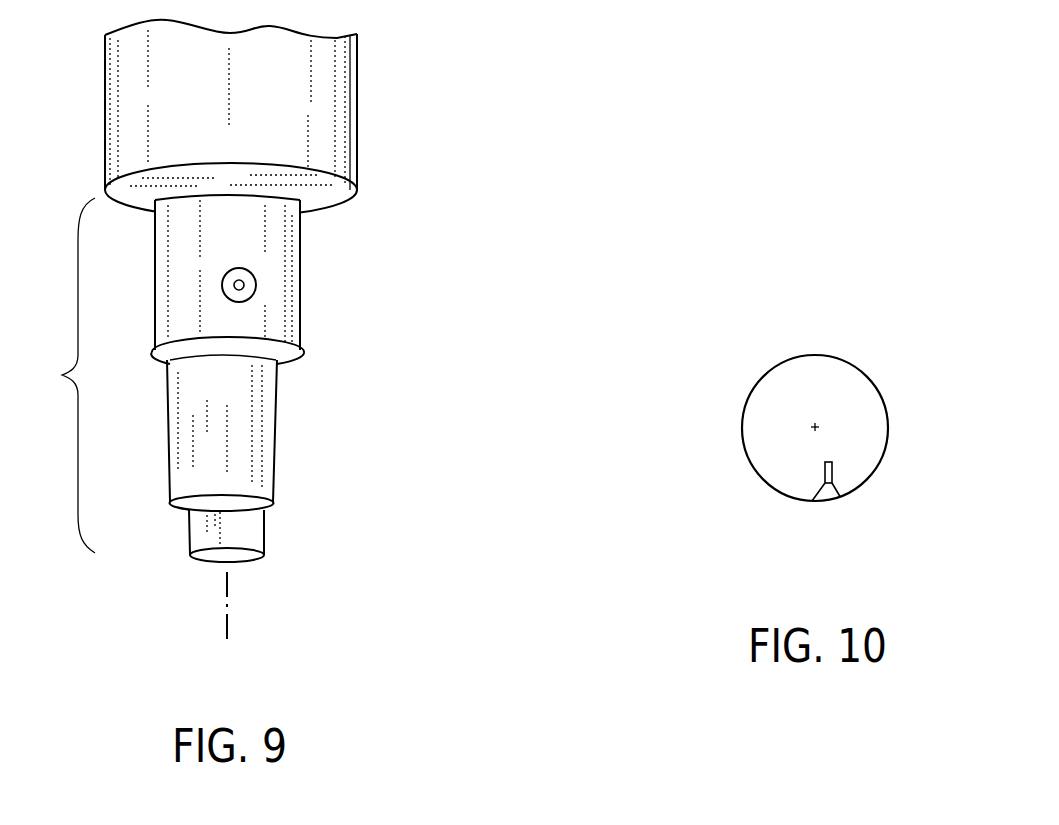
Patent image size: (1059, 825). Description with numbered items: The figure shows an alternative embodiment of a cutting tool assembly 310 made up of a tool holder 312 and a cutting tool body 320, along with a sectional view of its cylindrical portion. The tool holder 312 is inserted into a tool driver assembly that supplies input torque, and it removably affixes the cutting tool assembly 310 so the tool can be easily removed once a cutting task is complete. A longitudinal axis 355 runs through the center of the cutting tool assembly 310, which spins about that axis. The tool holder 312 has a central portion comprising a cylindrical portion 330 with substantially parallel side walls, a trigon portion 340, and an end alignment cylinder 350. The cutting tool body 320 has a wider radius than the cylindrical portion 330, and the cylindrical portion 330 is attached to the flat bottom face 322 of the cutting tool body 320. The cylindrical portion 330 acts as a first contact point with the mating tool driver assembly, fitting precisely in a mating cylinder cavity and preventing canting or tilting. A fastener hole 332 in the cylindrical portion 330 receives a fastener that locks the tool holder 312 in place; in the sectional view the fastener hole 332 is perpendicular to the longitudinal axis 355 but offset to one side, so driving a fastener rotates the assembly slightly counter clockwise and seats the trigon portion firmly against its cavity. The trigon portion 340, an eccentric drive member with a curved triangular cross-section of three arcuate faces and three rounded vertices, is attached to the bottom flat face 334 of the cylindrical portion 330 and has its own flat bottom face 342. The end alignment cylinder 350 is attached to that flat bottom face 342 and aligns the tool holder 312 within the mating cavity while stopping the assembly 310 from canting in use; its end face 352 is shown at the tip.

In FIG. 9, the cutting tool assembly 310 is at (468, 58).
In FIG. 9, the tool holder 312 is at (55, 375).
In FIG. 9, the cutting tool body 320 is at (343, 137).
In FIG. 9, the flat bottom face 322 is at (343, 195).
In FIG. 9, the cylindrical portion 330 is at (288, 307).
In FIG. 10, the cylindrical portion 330 is at (743, 438).
In FIG. 9, the fastener hole 332 is at (256, 282).
In FIG. 10, the fastener hole 332 is at (835, 500).
In FIG. 9, the bottom flat face 334 is at (295, 370).
In FIG. 9, the trigon portion 340 is at (270, 457).
In FIG. 9, the flat bottom face 342 is at (182, 514).
In FIG. 9, the end alignment cylinder 350 is at (265, 530).
In FIG. 9, the tip end face 352 is at (255, 558).
In FIG. 9, the longitudinal axis 355 is at (232, 617).
In FIG. 10, the longitudinal axis 355 is at (813, 420).